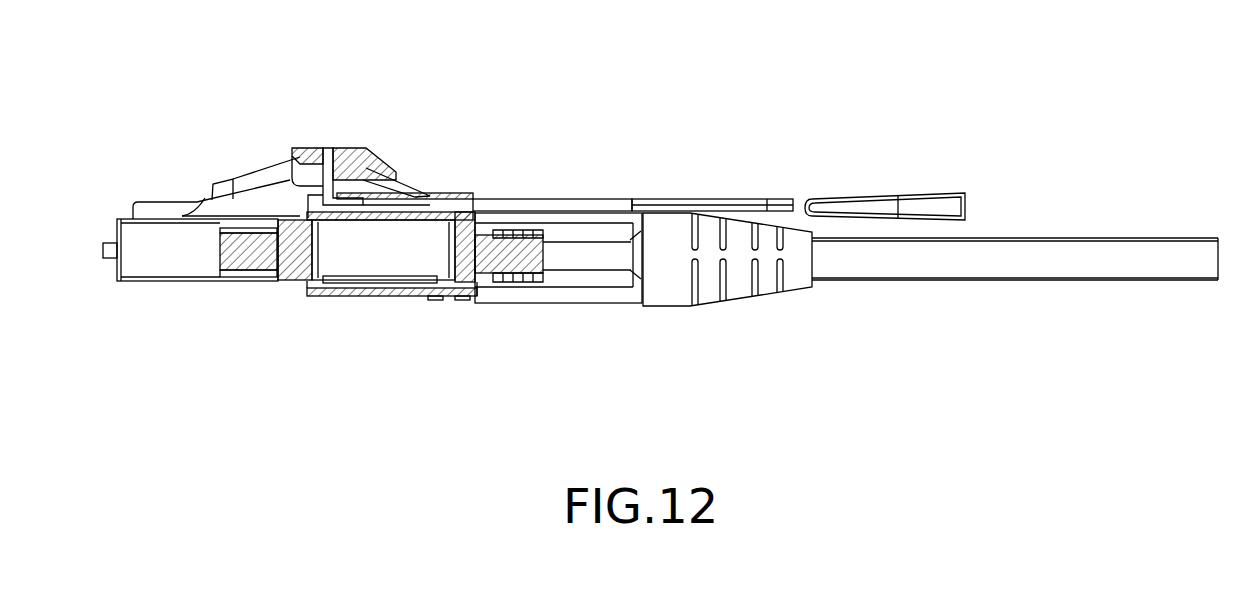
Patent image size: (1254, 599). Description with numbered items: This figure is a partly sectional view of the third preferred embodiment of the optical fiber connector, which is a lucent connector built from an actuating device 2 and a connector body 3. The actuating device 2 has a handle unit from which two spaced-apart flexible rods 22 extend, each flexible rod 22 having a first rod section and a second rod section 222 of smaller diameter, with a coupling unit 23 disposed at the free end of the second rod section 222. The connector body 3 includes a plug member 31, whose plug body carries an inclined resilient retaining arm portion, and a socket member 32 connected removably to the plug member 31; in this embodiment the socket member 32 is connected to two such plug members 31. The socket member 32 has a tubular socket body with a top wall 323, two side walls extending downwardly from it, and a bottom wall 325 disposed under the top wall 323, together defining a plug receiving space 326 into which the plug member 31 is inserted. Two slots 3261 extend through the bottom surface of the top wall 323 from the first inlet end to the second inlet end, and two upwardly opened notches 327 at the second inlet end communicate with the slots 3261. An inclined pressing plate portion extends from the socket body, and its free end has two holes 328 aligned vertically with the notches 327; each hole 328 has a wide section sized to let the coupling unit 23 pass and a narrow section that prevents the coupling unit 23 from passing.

The actuating device 2 is at (793, 162).
The flexible rod 22 is at (603, 198).
The second rod section 222 is at (290, 175).
The coupling unit 23 is at (325, 146).
The connector body 3 is at (283, 323).
The plug member 31 is at (163, 283).
The socket member 32 is at (393, 302).
The top wall 323 is at (396, 178).
The bottom wall 325 is at (358, 300).
The plug receiving space 326 is at (458, 210).
The slot 3261 is at (438, 193).
The notch 327 is at (300, 202).
The hole 328 is at (317, 142).